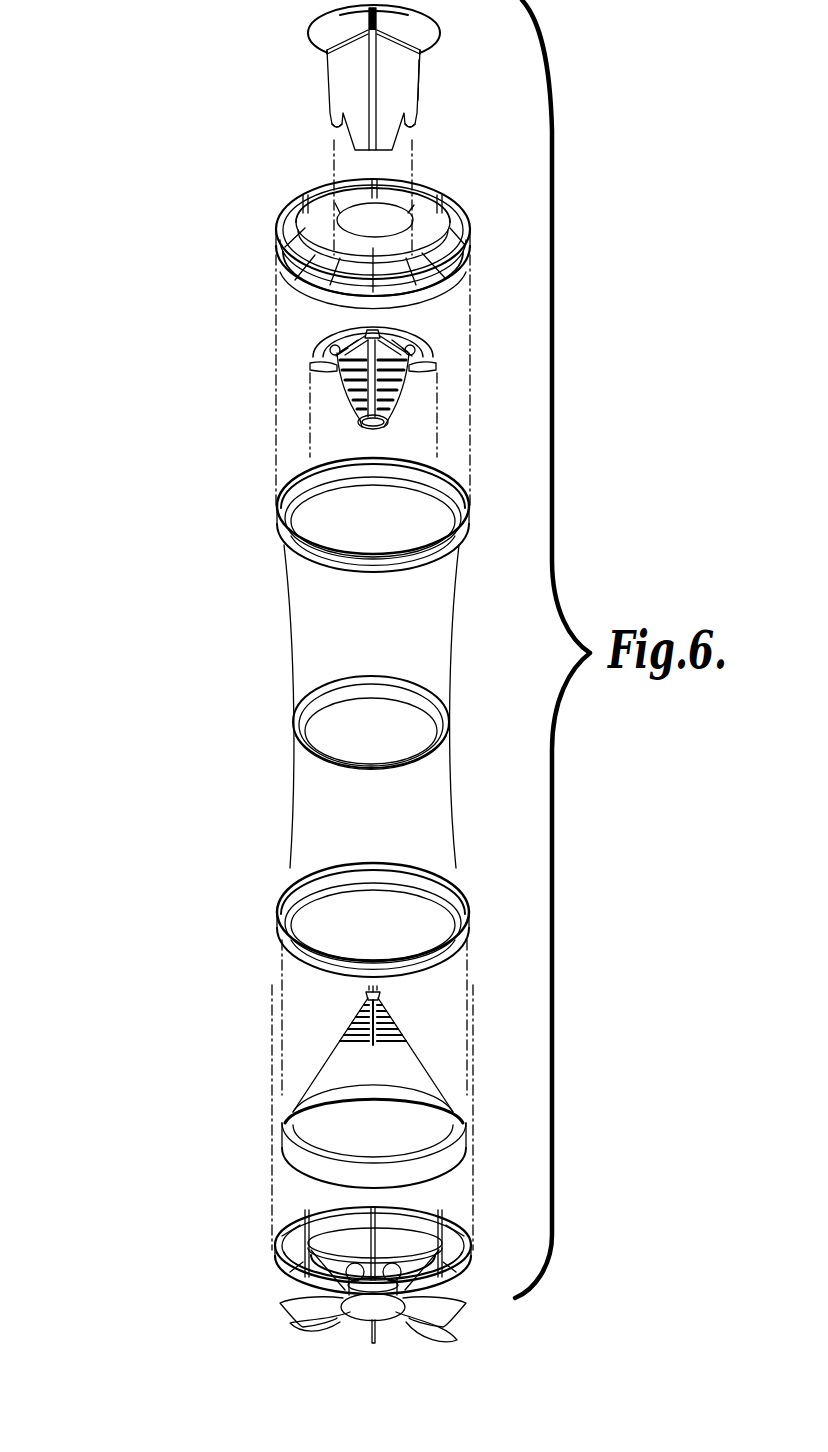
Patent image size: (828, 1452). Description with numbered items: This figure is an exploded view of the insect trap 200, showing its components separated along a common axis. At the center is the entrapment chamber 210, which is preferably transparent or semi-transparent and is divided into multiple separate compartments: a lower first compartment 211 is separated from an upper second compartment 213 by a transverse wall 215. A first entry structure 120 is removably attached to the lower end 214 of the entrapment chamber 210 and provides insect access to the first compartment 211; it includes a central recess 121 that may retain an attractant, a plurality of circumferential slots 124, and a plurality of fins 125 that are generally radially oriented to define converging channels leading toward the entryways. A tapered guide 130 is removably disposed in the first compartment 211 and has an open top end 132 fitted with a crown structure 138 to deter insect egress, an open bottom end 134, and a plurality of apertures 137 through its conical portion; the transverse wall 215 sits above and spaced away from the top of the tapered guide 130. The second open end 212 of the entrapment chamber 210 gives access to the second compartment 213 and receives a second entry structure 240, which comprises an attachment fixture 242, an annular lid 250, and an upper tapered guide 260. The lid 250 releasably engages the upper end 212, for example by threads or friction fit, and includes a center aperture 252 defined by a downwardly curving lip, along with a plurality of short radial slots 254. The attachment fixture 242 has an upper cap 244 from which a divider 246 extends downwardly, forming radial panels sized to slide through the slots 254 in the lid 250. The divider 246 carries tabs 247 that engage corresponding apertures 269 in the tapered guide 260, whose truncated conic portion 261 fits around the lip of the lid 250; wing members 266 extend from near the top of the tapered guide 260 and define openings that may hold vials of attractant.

The insect trap 200 is at (138, 85).
The attachment fixture 242 is at (355, 75).
The upper cap 244 is at (400, 22).
The divider 246 is at (427, 77).
The tabs 247 is at (333, 116).
The second entry structure 240 is at (339, 244).
The annular lid 250 is at (360, 244).
The center aperture 252 is at (458, 214).
The radial slots 254 is at (297, 273).
The tapered guide 260 is at (323, 372).
The truncated conic portion 261 is at (355, 403).
The wing members 266 is at (413, 353).
The apertures 269 is at (357, 338).
The entrapment chamber 210 is at (321, 717).
The second open end 212 is at (300, 473).
The second compartment 213 is at (303, 582).
The transverse wall 215 is at (345, 718).
The first compartment 211 is at (310, 803).
The lower end 214 is at (300, 963).
The tapered guide 130 is at (356, 1084).
The open top end 132 is at (367, 995).
The apertures 137 is at (353, 1020).
The crown structure 138 is at (380, 995).
The open bottom end 134 is at (308, 1148).
The first entry structure 120 is at (350, 1275).
The circumferential slots 124 is at (300, 1220).
The fins 125 is at (307, 1300).
The central recess 121 is at (380, 1310).